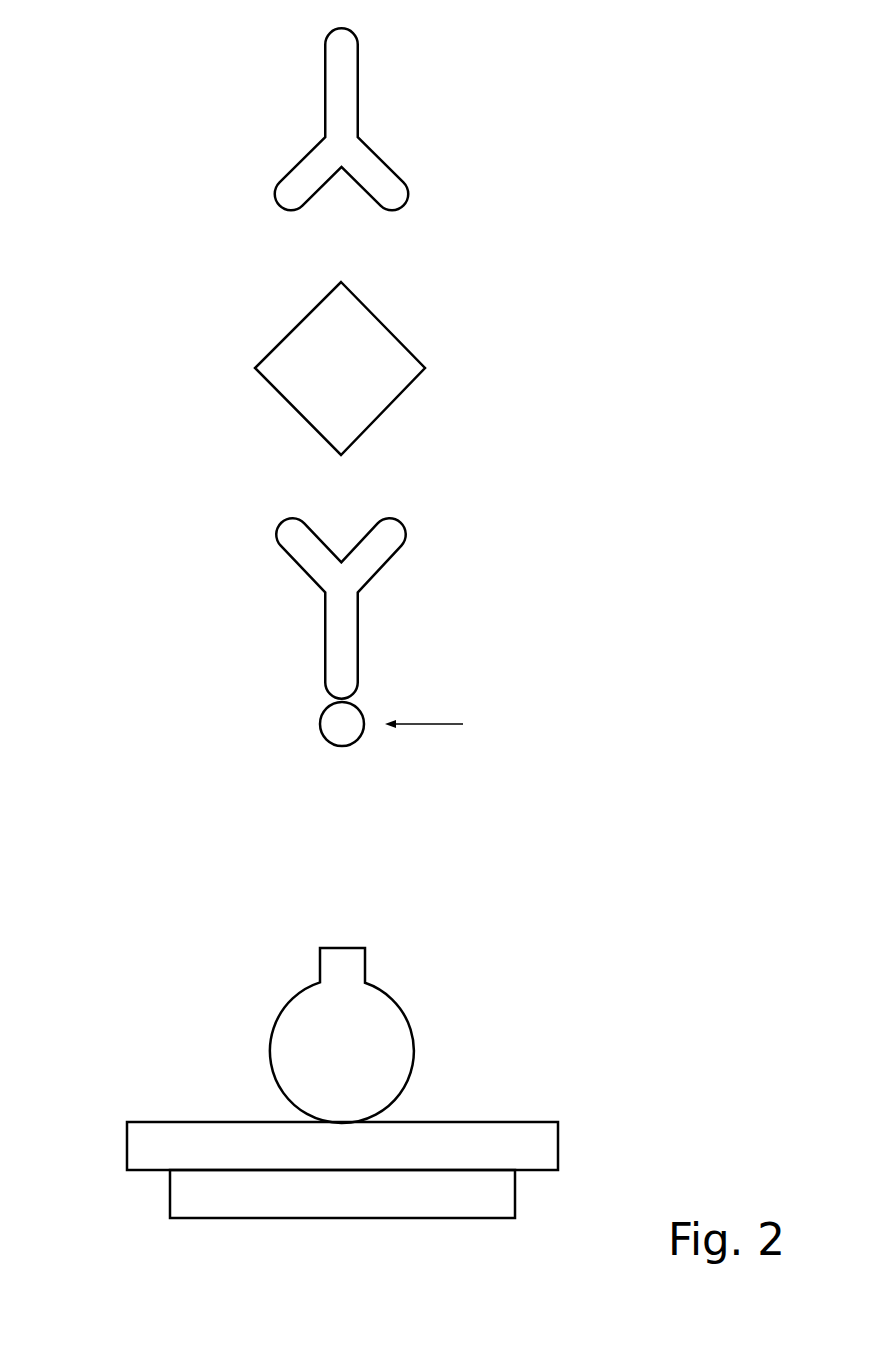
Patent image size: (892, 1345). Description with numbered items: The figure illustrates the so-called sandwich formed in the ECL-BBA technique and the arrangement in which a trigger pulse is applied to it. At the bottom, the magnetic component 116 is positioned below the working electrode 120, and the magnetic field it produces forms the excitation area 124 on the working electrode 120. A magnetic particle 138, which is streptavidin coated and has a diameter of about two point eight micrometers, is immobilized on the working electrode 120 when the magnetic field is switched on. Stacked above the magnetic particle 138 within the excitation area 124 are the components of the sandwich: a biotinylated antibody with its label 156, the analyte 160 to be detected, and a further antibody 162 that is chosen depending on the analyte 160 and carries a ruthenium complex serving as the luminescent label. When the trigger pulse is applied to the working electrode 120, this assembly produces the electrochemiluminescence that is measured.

The magnetic component 116 is at (170, 1198).
The working electrode 120 is at (127, 1152).
The excitation area 124 is at (595, 31).
The magnetic particle 138 is at (268, 1043).
The labeled antibody with label 156 is at (477, 512).
The analyte 160 is at (393, 330).
The antibody 162 is at (359, 95).